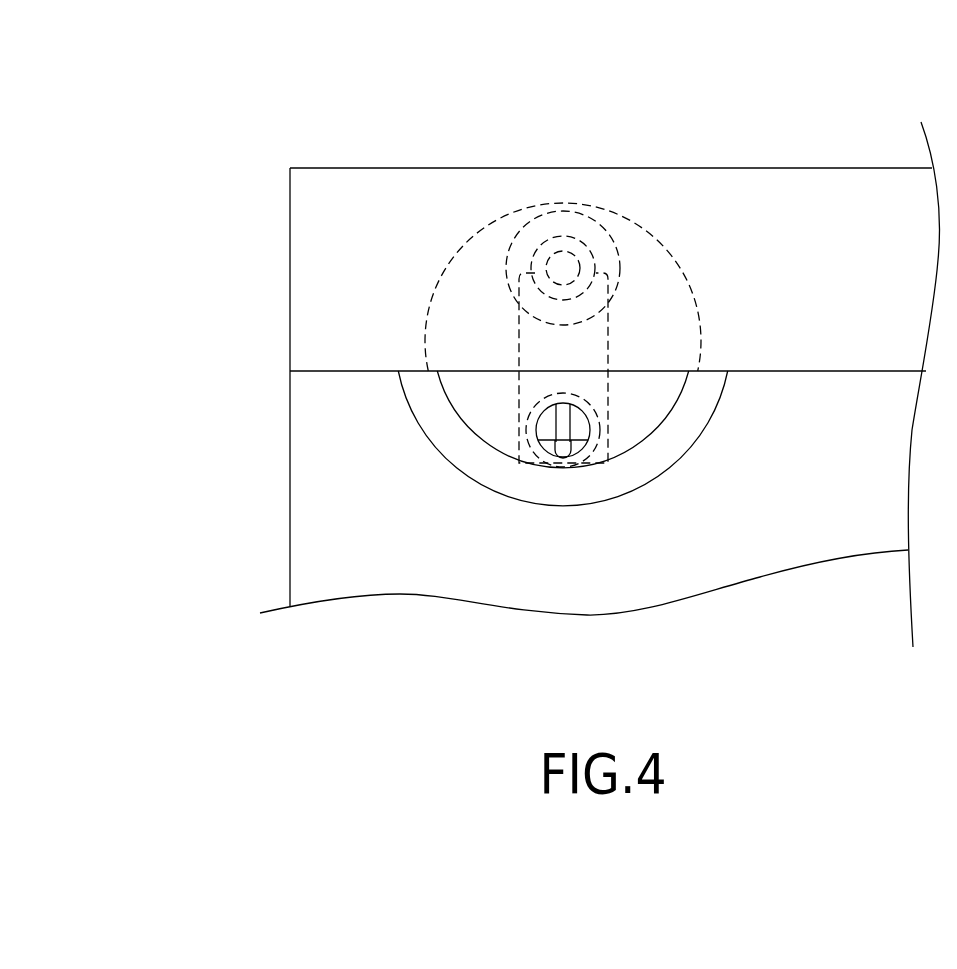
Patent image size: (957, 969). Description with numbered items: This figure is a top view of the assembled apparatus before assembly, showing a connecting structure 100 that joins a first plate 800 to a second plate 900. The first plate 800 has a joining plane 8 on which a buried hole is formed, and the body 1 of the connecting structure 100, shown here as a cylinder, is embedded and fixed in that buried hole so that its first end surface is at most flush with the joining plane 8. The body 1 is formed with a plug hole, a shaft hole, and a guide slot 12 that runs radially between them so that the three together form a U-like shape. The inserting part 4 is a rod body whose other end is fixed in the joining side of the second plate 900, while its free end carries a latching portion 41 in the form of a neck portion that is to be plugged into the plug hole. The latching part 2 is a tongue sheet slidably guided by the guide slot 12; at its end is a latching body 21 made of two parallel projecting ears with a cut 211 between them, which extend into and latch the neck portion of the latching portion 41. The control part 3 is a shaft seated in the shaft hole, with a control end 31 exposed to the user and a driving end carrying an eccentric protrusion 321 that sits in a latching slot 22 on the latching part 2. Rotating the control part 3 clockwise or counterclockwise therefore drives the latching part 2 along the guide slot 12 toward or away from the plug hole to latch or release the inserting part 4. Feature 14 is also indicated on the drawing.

The second plate 900 is at (718, 167).
The first plate 800 is at (289, 476).
The joining plane 8 is at (312, 533).
The connecting structure 100 is at (726, 464).
The body 1 is at (643, 228).
The inserting part 4 is at (607, 226).
The latching portion 41 is at (563, 250).
The latching body 21 is at (519, 275).
The cut 211 is at (545, 322).
The guide edge 14 is at (495, 371).
The guide slot 12 is at (517, 388).
The latching slot 22 is at (518, 438).
The latching part 2 is at (611, 468).
The control part 3 is at (600, 423).
The control end 31 is at (572, 423).
The protrusion 321 is at (572, 468).